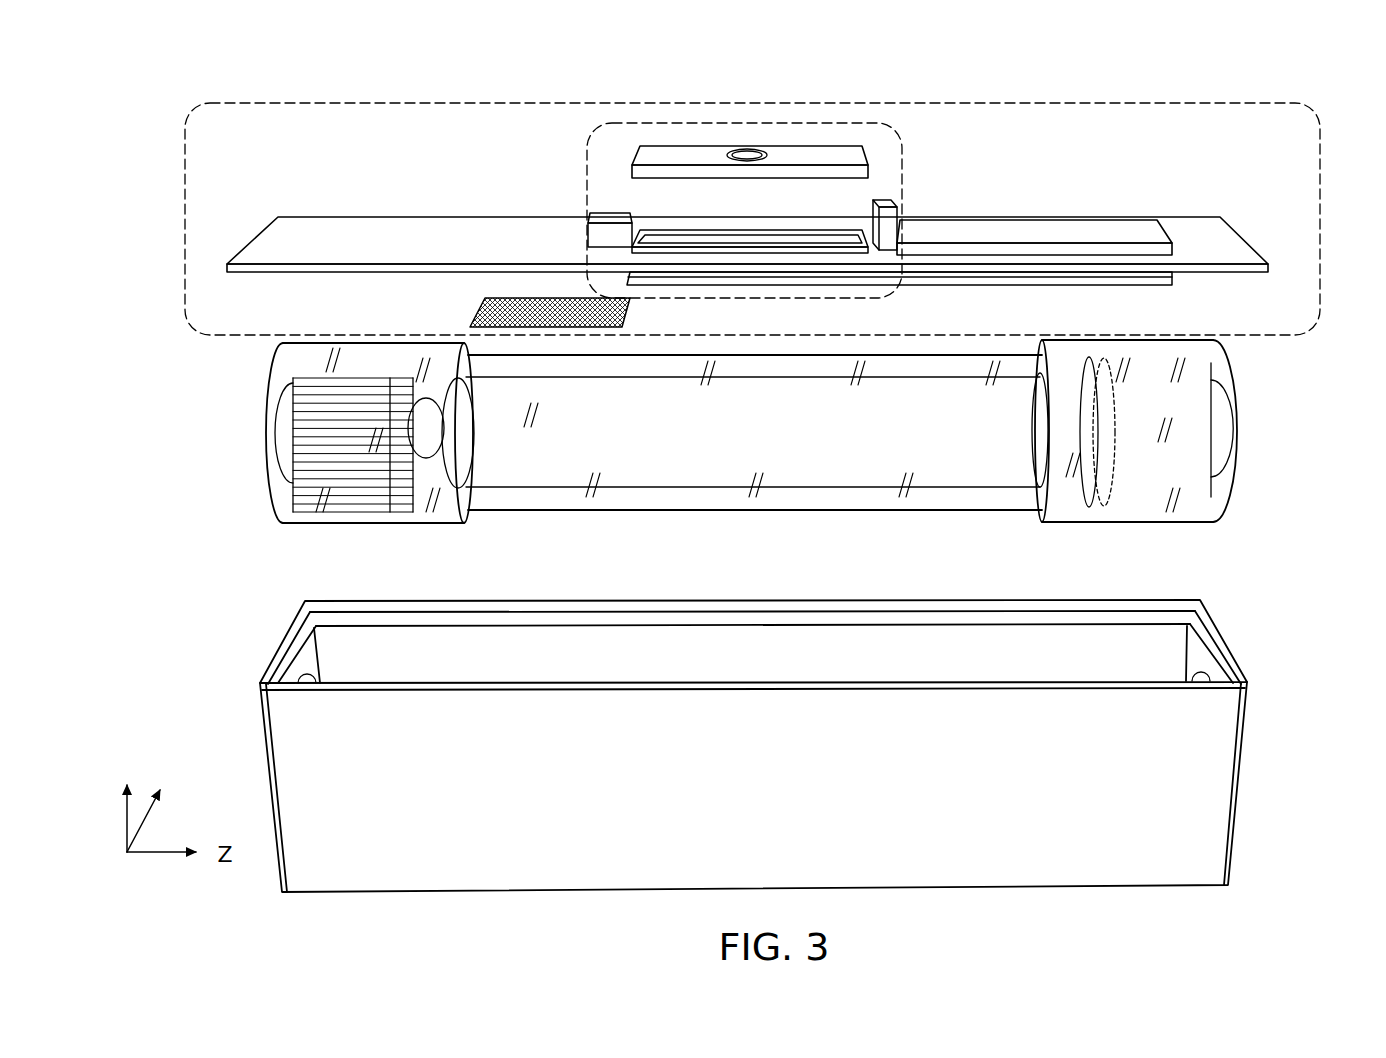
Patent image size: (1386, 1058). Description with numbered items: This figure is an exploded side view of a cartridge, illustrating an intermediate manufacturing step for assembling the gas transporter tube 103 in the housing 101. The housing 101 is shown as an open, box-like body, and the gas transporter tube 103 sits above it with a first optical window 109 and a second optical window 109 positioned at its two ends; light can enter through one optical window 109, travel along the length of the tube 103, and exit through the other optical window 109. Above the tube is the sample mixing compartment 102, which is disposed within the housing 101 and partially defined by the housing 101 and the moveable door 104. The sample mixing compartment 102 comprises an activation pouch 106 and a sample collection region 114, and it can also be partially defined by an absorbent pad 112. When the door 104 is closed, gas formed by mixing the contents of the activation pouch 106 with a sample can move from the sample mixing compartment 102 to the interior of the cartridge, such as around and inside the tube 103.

The housing 101 is at (333, 230).
The sample mixing compartment 102 is at (432, 103).
The gas transporter tube 103 is at (790, 504).
The moveable door 104 is at (1082, 232).
The activation pouch 106 is at (480, 303).
The optical window 109 is at (267, 430).
The absorbent pad 112 is at (690, 148).
The sample collection region 114 is at (903, 180).